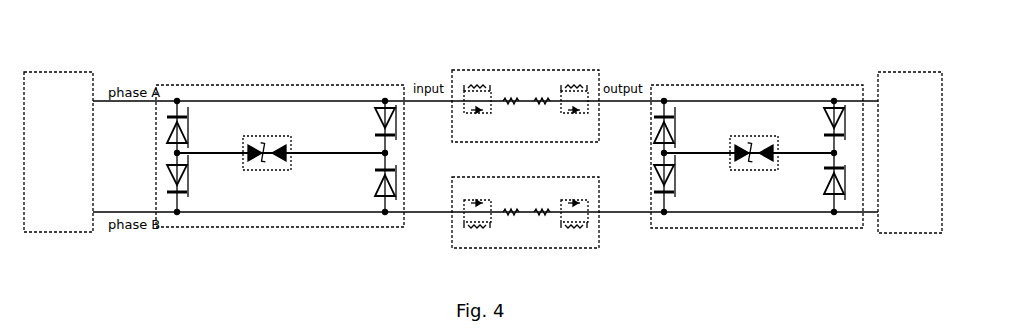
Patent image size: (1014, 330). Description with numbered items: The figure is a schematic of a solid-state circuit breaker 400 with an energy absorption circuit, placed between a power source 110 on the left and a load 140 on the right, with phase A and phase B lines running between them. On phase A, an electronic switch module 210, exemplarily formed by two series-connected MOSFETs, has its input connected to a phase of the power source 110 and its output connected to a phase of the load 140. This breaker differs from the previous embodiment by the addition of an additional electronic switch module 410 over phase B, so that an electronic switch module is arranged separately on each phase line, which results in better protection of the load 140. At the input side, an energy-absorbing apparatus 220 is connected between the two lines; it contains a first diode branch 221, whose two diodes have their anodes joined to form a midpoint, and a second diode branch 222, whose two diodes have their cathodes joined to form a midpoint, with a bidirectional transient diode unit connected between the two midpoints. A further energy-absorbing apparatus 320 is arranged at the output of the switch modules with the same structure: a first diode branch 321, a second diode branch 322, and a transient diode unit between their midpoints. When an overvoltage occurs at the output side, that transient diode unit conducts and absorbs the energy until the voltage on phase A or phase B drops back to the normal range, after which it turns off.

The power source 110 is at (58, 152).
The load 140 is at (910, 152).
The electronic switch module 210 is at (539, 138).
The energy-absorbing apparatus 220 is at (277, 139).
The first diode branch 221 is at (160, 155).
The second diode branch 222 is at (393, 153).
The energy-absorbing apparatus 320 is at (764, 140).
The first diode branch 321 is at (645, 162).
The second diode branch 322 is at (838, 155).
The solid-state circuit breaker 400 is at (482, 56).
The additional electronic switch module 410 is at (592, 230).